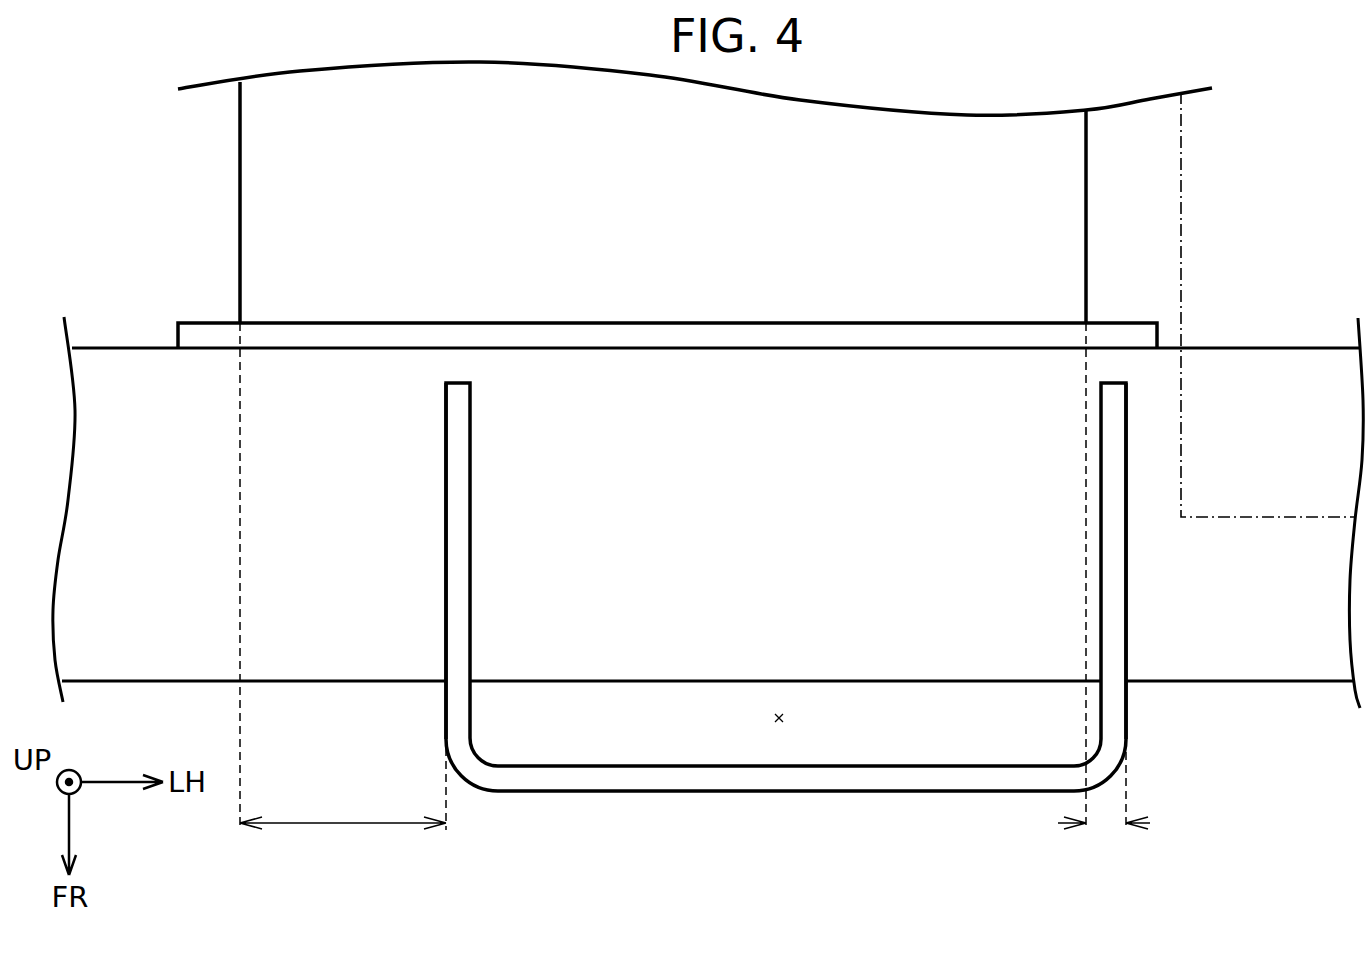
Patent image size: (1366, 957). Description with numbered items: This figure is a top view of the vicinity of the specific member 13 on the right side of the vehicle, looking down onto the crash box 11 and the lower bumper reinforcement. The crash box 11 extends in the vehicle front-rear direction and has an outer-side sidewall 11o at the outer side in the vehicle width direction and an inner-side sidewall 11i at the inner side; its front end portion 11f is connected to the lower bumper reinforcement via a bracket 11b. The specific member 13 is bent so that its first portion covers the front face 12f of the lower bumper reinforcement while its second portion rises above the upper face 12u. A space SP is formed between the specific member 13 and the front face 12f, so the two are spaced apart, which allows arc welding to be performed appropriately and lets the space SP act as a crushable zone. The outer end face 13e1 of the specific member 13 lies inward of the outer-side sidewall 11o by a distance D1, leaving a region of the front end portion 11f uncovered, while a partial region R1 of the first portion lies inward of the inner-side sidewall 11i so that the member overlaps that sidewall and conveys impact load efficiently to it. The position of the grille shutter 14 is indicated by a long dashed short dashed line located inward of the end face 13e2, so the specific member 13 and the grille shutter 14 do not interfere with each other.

The crash box 11 is at (656, 205).
The outer-side sidewall 11o is at (240, 203).
The inner-side sidewall 11i is at (1086, 193).
The front end portion 11f is at (290, 323).
The bracket 11b is at (1115, 337).
The grille shutter 14 is at (1181, 203).
The upper face 12u is at (1299, 630).
The front face 12f is at (1252, 683).
The specific member 13 is at (786, 641).
The end face 13e1 is at (446, 694).
The end face 13e2 is at (1128, 695).
The space SP is at (779, 722).
The distance D1 is at (343, 598).
The partial region R1 is at (1104, 598).